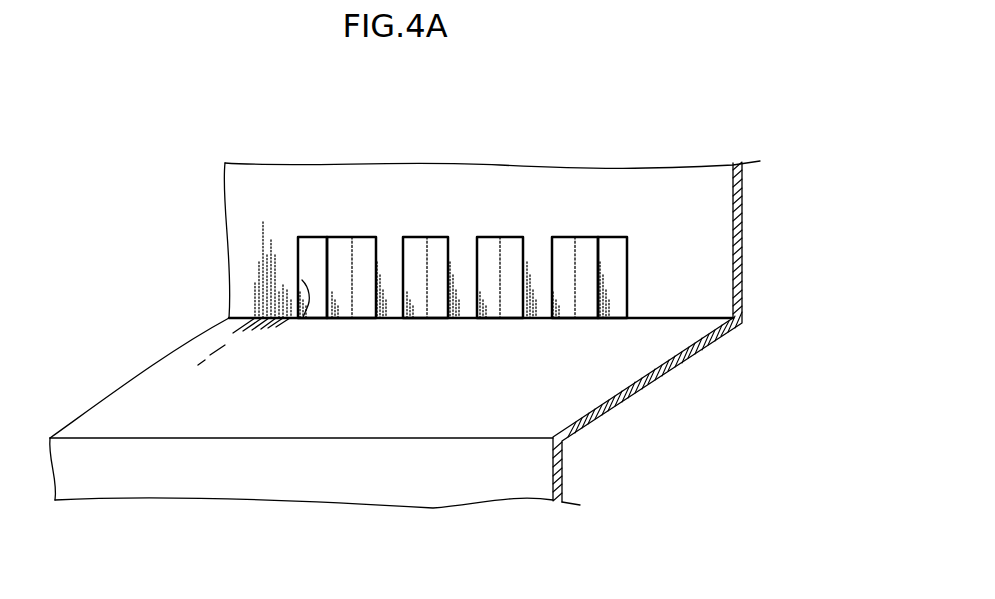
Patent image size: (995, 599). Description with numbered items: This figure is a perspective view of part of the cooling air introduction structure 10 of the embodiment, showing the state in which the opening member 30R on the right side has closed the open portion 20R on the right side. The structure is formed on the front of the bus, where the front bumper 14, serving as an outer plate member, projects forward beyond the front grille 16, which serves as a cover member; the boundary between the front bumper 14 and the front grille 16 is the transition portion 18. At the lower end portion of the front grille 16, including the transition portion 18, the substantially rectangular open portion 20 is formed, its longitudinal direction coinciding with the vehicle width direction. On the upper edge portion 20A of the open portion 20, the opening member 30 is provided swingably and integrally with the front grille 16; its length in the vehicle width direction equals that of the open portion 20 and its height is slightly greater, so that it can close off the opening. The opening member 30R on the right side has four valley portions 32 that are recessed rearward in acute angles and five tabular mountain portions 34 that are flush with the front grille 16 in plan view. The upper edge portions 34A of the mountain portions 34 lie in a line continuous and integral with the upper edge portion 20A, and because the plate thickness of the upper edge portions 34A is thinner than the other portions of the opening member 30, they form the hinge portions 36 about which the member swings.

The cooling air introduction structure 10 is at (203, 160).
The front bumper 14 is at (375, 472).
The front grille 16 is at (407, 178).
The transition portion 18 is at (673, 312).
The open portion 20 is at (284, 346).
The open portion on the right side 20R is at (300, 318).
The upper edge portion of the open portion 20A is at (603, 242).
The opening member 30 is at (432, 356).
The opening member on the right side 30R is at (462, 300).
The valley portion 32 is at (352, 262).
The mountain portion 34 is at (312, 320).
The upper edge portion of the mountain portion 34A is at (539, 237).
The hinge portion 36 is at (315, 236).